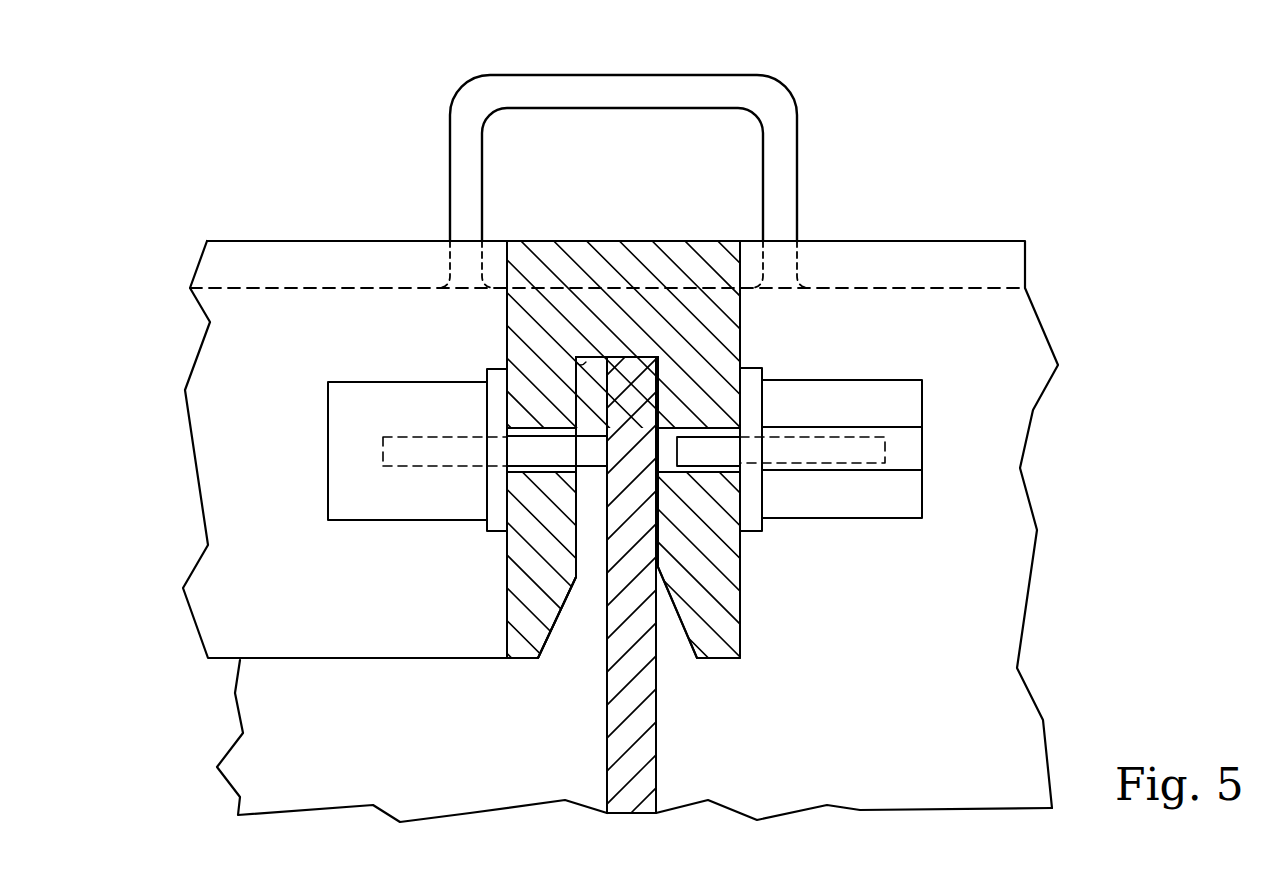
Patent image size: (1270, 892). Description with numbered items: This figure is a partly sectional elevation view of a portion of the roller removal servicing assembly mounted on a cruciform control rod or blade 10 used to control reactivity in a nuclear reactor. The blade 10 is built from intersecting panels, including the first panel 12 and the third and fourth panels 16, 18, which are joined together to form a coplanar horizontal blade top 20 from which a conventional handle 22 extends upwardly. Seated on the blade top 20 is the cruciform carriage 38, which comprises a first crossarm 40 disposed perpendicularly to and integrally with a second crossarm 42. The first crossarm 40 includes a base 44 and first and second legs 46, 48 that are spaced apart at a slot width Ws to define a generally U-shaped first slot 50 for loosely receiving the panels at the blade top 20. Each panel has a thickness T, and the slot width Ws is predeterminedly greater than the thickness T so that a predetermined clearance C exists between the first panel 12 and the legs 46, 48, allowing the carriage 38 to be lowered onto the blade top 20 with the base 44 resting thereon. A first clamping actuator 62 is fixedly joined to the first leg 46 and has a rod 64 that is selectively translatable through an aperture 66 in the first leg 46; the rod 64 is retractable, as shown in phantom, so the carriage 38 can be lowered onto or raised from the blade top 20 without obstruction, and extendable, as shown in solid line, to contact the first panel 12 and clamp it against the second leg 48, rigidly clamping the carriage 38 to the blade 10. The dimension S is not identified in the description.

The cruciform control rod or blade 10 is at (233, 843).
The first panel 12 is at (627, 808).
The third panel 16 is at (848, 795).
The fourth panel 18 is at (415, 807).
The blade top 20 is at (640, 356).
The handle 22 is at (645, 75).
The cruciform carriage 38 is at (168, 262).
The first crossarm 40 is at (604, 234).
The second crossarm 42 is at (905, 236).
The base 44 is at (577, 365).
The first leg 46 is at (504, 656).
The second leg 48 is at (743, 634).
The first U-shaped slot 50 is at (578, 578).
The first clamping actuator 62 is at (380, 521).
The rod 64 is at (515, 458).
The aperture 66 is at (515, 432).
The slot width Ws is at (692, 512).
The panel thickness T is at (692, 535).
The clearance C is at (647, 562).
The spacing S is at (963, 717).